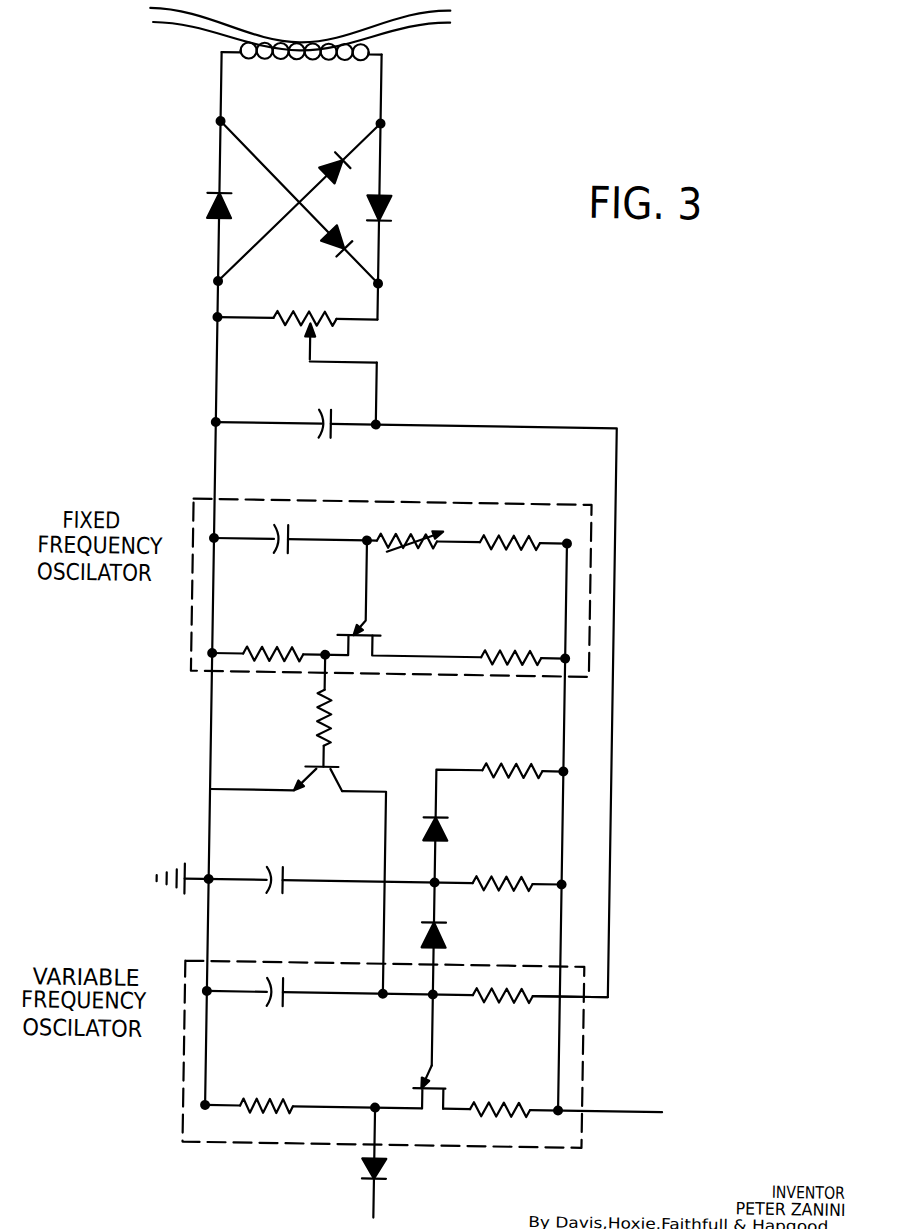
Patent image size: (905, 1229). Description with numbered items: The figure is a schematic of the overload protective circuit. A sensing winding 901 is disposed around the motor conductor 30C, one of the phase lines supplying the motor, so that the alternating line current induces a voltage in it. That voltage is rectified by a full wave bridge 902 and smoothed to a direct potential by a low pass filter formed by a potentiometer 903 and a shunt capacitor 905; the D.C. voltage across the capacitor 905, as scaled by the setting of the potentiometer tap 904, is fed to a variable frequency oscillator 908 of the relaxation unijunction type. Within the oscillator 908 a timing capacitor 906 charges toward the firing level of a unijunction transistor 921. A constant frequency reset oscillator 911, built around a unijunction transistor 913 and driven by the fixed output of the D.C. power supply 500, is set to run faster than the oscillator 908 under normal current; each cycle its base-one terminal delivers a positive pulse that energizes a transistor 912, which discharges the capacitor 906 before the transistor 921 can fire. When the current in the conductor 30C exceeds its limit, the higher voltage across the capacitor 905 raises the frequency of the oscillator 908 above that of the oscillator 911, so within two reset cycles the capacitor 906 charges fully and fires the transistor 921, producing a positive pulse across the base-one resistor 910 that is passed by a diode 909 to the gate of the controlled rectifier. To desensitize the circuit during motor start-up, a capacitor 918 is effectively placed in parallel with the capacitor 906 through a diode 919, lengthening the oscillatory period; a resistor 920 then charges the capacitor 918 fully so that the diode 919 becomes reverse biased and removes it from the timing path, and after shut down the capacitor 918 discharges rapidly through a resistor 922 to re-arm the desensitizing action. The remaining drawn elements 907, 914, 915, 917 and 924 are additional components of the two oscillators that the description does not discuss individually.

The conductor 30C is at (326, 32).
The sensing winding 901 is at (293, 59).
The full wave bridge 902 is at (204, 119).
The potentiometer 903 is at (280, 327).
The potentiometer tap 904 is at (312, 333).
The shunt capacitor 905 is at (351, 442).
The timing capacitor 906 is at (280, 1004).
The resistor 907 is at (497, 999).
The variable frequency oscillator 908 is at (193, 1039).
The diode 909 is at (390, 1162).
The base 1 resistor 910 is at (303, 1093).
The constant frequency reset oscillator 911 is at (193, 595).
The transistor 912 is at (329, 773).
The unijunction transistor 913 is at (372, 630).
The capacitor 914 is at (281, 554).
The resistor 915 is at (273, 653).
The variable resistor 917 is at (404, 545).
The capacitor 918 is at (281, 892).
The diode 919 is at (450, 940).
The resistor 920 is at (514, 889).
The unijunction transistor 921 is at (447, 825).
The resistor 922 is at (508, 759).
The resistor 924 is at (539, 1095).
The D.C. power supply 500 is at (674, 1083).